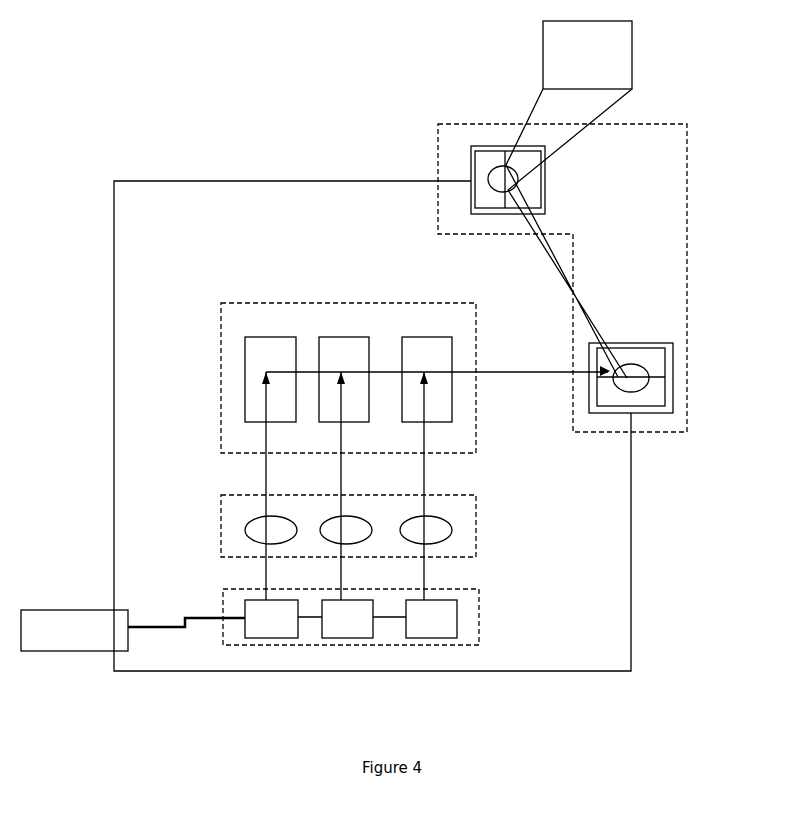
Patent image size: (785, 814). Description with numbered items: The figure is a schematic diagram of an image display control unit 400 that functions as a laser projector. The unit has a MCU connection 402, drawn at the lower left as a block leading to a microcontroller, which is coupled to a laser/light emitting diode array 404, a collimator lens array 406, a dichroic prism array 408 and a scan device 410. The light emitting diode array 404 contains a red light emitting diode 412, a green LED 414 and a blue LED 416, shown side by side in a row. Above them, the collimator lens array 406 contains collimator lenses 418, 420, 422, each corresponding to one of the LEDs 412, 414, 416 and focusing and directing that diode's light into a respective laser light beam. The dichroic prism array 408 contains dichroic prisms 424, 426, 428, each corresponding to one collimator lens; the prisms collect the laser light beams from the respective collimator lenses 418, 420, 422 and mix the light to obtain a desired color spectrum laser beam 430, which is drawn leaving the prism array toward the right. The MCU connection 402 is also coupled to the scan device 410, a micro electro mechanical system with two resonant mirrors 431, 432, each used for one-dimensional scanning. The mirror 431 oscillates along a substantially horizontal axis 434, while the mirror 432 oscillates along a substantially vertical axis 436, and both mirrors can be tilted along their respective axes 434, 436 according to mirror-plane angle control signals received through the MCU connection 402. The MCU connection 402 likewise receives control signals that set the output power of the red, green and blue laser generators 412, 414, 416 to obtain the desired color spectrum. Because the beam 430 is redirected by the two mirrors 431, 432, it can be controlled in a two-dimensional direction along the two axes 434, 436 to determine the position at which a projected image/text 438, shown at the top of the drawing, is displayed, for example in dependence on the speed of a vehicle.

The image display control unit 400 is at (210, 100).
The MCU connection 402 is at (98, 651).
The laser/light emitting diode array 404 is at (479, 596).
The collimator lens array 406 is at (476, 513).
The dichroic prism array 408 is at (476, 320).
The scan device 410 is at (438, 155).
The red light emitting diode 412 is at (271, 619).
The green LED 414 is at (347, 619).
The blue LED 416 is at (431, 619).
The collimator lens 418 is at (246, 523).
The collimator lens 420 is at (322, 523).
The collimator lens 422 is at (403, 523).
The dichroic prism 424 is at (247, 337).
The dichroic prism 426 is at (337, 337).
The dichroic prism 428 is at (420, 337).
The desired color spectrum laser beam 430 is at (527, 372).
The resonant mirror 431 is at (673, 350).
The resonant mirror 432 is at (545, 190).
The substantially horizontal axis 434 is at (657, 377).
The substantially vertical axis 436 is at (506, 190).
The projected image/text 438 is at (569, 105).